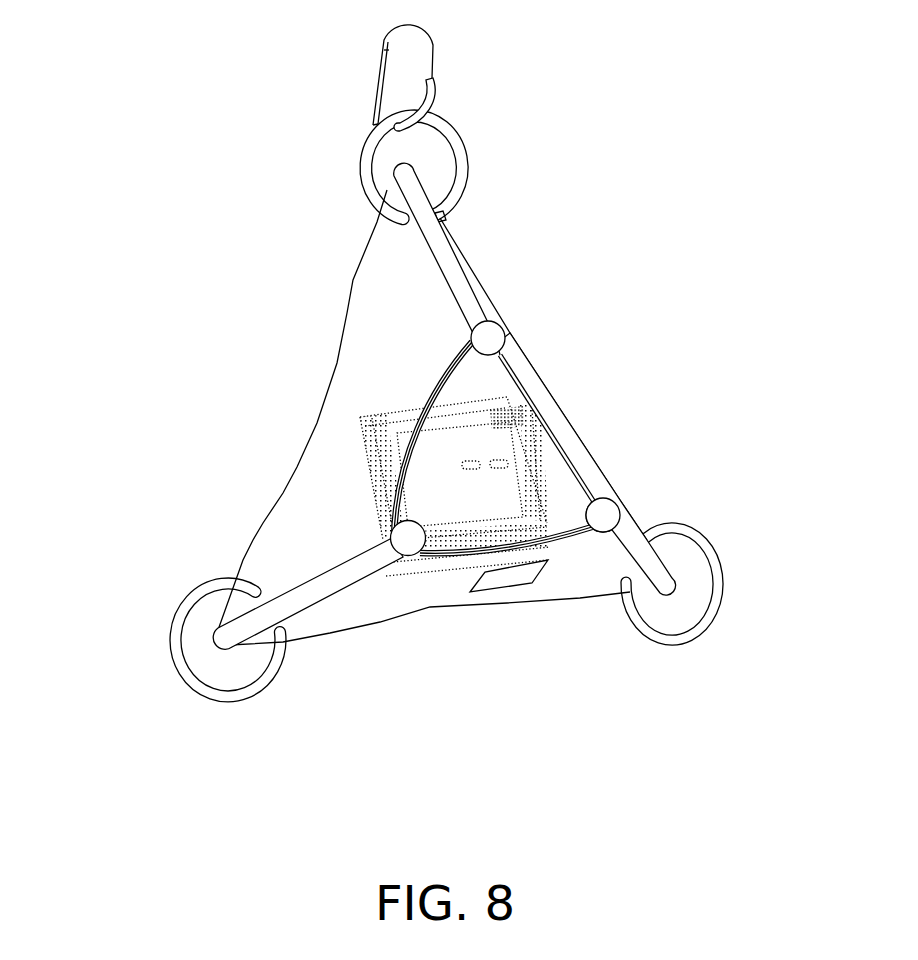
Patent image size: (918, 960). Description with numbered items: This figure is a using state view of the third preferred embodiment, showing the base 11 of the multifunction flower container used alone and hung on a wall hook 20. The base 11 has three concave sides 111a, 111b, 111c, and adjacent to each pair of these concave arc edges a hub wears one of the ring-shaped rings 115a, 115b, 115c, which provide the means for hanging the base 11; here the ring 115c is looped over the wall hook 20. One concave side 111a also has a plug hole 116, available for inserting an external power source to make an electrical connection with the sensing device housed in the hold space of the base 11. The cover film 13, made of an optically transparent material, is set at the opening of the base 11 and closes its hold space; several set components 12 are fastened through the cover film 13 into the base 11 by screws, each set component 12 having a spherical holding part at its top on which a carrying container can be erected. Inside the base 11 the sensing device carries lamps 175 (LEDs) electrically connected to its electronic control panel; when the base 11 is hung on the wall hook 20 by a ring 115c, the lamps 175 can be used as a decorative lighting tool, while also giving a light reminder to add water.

The wall hook 20 is at (402, 75).
The ring-shaped ring 115c is at (465, 163).
The base 11 is at (294, 264).
The set component 12 is at (497, 335).
The concave side 111c is at (413, 438).
The concave side 111b is at (550, 427).
The cover film 13 is at (558, 482).
The lamp 175 is at (430, 520).
The ring-shaped ring 115a is at (218, 687).
The concave side 111a is at (447, 557).
The plug hole 116 is at (513, 583).
The ring-shaped ring 115b is at (698, 608).